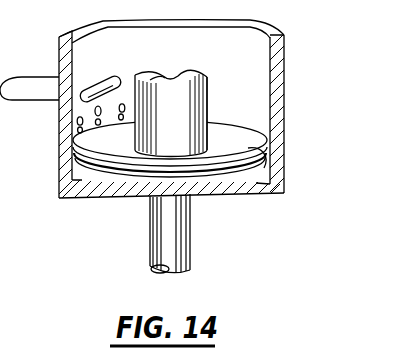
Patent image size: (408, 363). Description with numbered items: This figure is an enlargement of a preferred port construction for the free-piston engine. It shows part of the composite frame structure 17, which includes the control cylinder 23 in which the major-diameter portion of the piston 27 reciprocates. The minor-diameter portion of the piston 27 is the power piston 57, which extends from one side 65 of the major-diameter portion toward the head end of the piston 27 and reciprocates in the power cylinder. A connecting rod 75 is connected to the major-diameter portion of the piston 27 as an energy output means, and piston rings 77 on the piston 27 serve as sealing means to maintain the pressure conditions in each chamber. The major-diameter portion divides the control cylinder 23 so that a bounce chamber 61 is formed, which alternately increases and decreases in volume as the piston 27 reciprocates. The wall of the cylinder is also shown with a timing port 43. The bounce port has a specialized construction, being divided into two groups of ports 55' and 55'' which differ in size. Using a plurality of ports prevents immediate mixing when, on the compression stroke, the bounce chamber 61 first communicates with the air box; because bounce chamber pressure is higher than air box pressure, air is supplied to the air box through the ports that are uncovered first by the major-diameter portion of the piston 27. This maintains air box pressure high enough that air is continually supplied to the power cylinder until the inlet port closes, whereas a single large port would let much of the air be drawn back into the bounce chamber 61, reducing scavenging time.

The composite frame structure 17 is at (285, 179).
The control cylinder 23 is at (261, 62).
The piston 27 is at (205, 105).
The timing port 43 is at (100, 78).
The ports 55' is at (64, 122).
The ports 55'' is at (63, 138).
The power piston 57 is at (182, 124).
The bounce chamber 61 is at (262, 184).
The side of the major-diameter portion 65 is at (241, 140).
The connecting rod 75 is at (160, 240).
The piston rings 77 is at (250, 157).